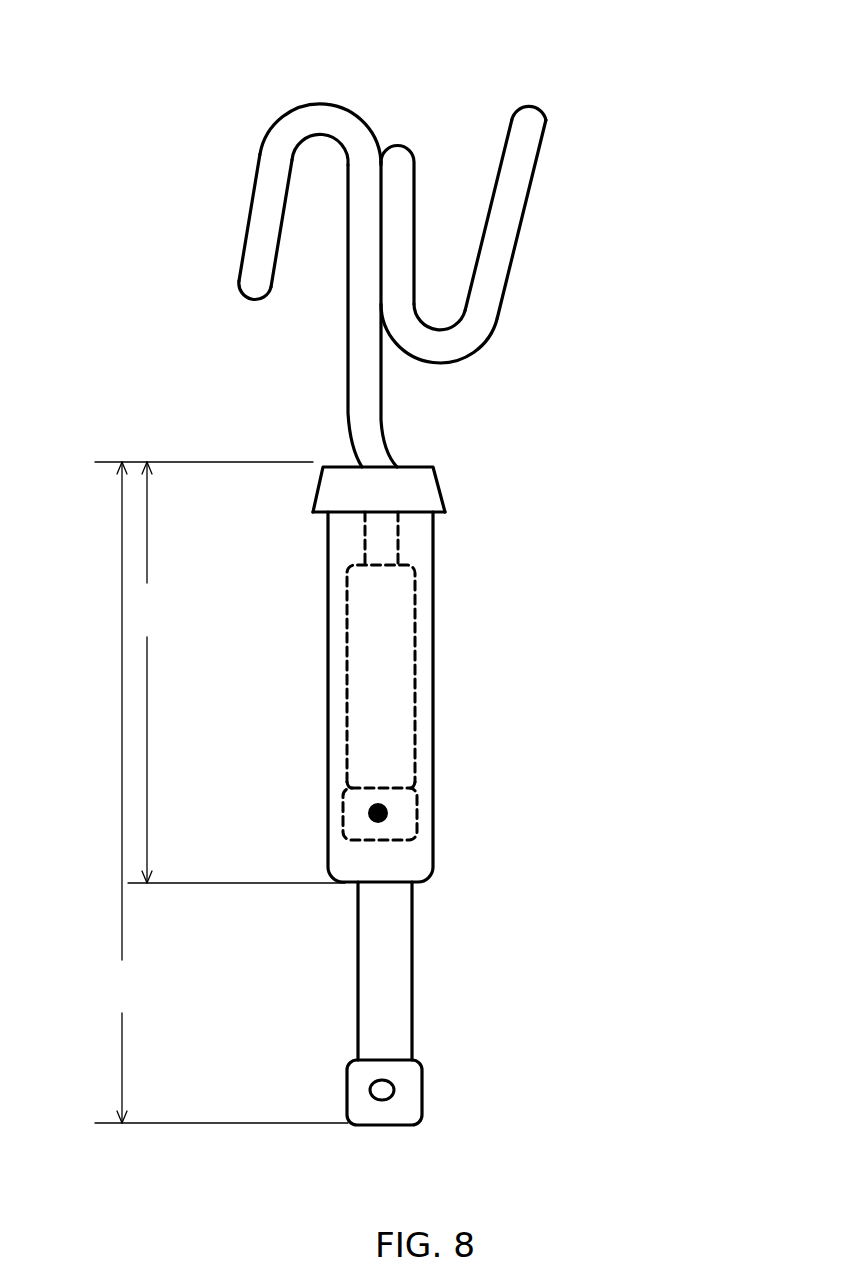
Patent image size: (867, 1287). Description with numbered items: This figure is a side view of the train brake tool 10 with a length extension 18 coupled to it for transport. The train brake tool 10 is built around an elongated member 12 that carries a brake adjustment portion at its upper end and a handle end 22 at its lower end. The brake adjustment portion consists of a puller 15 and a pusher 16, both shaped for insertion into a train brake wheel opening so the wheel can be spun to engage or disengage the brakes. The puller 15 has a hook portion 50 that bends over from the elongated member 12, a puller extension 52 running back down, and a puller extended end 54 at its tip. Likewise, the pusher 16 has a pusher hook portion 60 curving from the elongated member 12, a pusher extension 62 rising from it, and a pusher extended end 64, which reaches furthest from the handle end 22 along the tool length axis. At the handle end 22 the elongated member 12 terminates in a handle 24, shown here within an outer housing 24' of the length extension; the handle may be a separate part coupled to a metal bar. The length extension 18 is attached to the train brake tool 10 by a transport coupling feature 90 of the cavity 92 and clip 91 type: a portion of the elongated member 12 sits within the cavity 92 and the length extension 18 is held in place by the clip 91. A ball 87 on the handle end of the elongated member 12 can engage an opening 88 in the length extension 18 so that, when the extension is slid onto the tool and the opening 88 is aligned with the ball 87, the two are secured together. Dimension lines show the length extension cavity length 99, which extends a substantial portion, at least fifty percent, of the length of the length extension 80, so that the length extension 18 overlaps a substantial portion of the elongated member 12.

The train brake tool 10 is at (214, 80).
The elongated member 12 is at (418, 314).
The puller 15 is at (260, 171).
The pusher 16 is at (522, 280).
The length extension 18 is at (331, 971).
The handle end 22 is at (420, 862).
The handle 24 is at (452, 676).
The housing 24' is at (304, 697).
The hook portion 50 is at (320, 84).
The puller extension 52 is at (200, 220).
The puller extended end 54 is at (214, 331).
The pusher hook portion 60 is at (487, 267).
The pusher extension 62 is at (560, 219).
The pusher extended end 64 is at (515, 62).
The length of the length extension 80 is at (221, 792).
The ball 87 is at (452, 783).
The opening 88 is at (337, 1090).
The transport coupling feature 90 is at (379, 499).
The clip 91 is at (438, 512).
The cavity 92 is at (463, 552).
The length extension cavity length 99 is at (220, 672).